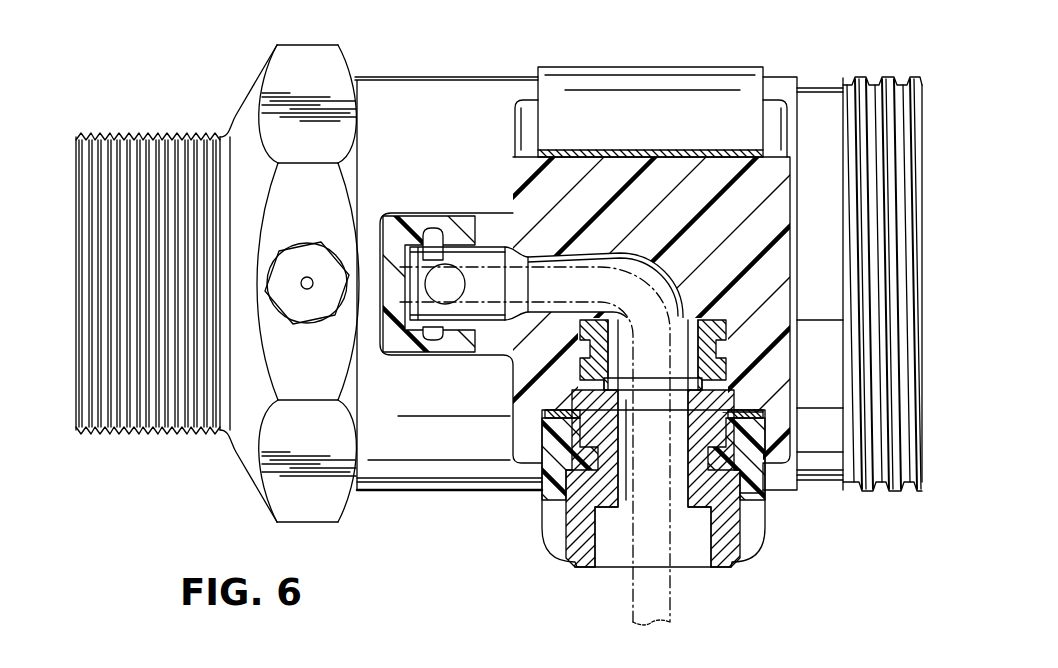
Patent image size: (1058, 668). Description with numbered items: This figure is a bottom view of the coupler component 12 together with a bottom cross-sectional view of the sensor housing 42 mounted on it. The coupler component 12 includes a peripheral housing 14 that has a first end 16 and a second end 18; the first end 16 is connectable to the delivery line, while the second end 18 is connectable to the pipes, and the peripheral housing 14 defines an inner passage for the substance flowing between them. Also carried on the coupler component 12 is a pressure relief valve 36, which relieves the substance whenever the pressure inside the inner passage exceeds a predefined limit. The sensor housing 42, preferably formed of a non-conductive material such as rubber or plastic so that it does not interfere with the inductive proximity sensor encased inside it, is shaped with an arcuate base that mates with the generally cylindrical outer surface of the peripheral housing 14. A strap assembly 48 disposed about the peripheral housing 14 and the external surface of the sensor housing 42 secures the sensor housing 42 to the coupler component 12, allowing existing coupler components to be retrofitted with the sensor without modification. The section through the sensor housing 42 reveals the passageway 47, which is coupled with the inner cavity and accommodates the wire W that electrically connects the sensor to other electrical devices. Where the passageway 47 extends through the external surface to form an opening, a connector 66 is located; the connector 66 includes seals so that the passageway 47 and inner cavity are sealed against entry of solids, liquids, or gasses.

The coupler component 12 is at (618, 37).
The peripheral housing 14 is at (456, 78).
The first end 16 is at (918, 80).
The second end 18 is at (78, 136).
The pressure relief valve 36 is at (304, 303).
The sensor housing 42 is at (770, 395).
The passageway 47 is at (652, 492).
The strap assembly 48 is at (738, 66).
The connector 66 is at (722, 553).
The wire W is at (633, 600).